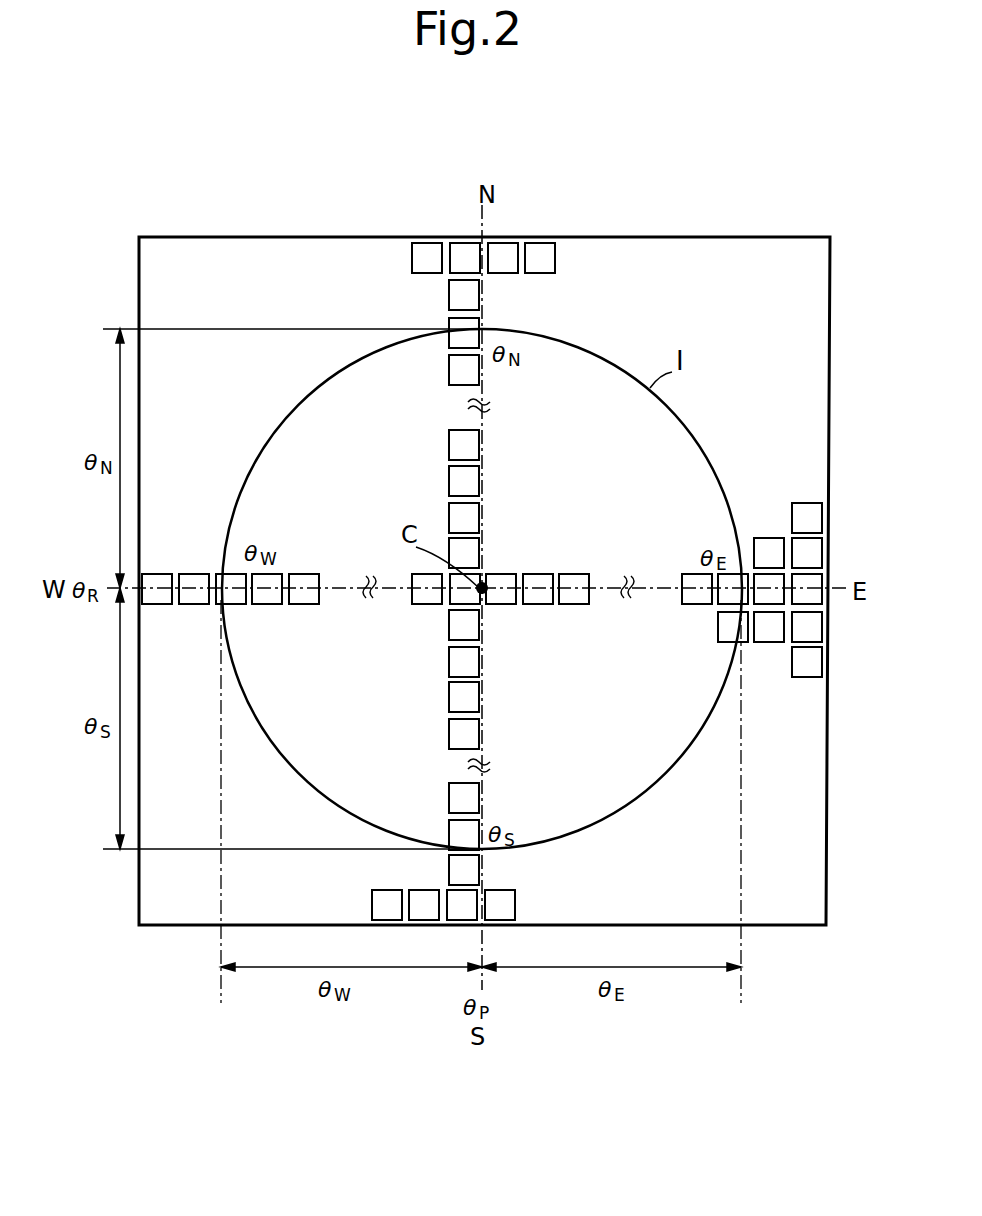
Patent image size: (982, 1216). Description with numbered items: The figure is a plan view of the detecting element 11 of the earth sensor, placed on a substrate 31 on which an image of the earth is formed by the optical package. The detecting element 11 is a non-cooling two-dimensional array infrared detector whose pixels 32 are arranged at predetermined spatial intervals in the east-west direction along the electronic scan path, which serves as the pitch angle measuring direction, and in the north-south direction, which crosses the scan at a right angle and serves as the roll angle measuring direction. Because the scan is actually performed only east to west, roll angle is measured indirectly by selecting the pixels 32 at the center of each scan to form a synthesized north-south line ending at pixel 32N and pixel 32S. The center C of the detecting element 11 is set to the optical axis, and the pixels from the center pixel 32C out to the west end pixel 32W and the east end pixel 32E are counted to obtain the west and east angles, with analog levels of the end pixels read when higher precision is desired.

The substrate 31 is at (713, 236).
The detecting element 11 is at (806, 498).
The pixels 32 is at (501, 578).
The pixel on the north end 32N is at (460, 337).
The pixel on the south end 32S is at (458, 838).
The pixel on the east end 32E is at (734, 583).
The pixel on the west end 32W is at (230, 582).
The pixel of the center 32C is at (457, 595).